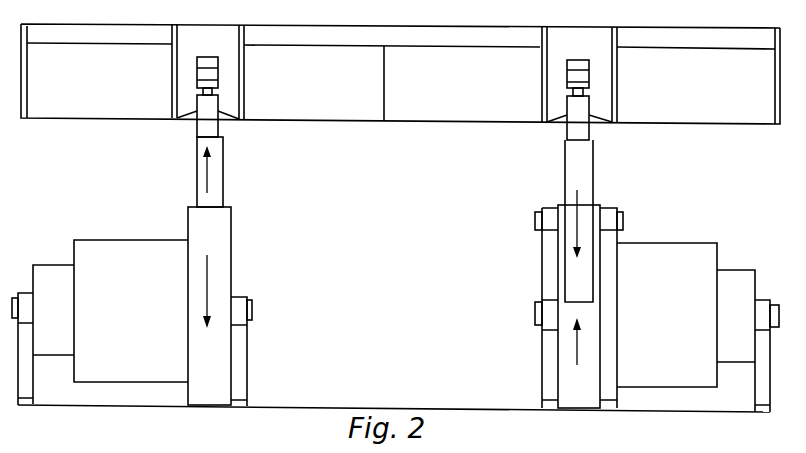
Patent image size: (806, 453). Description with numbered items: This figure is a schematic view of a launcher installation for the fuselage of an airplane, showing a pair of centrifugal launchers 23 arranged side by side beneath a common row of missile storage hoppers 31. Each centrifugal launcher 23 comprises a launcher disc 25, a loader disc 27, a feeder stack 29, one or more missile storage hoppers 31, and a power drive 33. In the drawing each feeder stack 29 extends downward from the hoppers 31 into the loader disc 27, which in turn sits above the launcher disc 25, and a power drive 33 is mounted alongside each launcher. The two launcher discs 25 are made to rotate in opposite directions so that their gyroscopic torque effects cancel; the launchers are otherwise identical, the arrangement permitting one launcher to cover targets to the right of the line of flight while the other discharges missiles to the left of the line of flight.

The centrifugal launcher 23 is at (234, 256).
The launcher disc 25 is at (200, 383).
The loader disc 27 is at (226, 170).
The feeder stack 29 is at (200, 128).
The missile storage hopper 31 is at (106, 88).
The power drive 33 is at (139, 316).